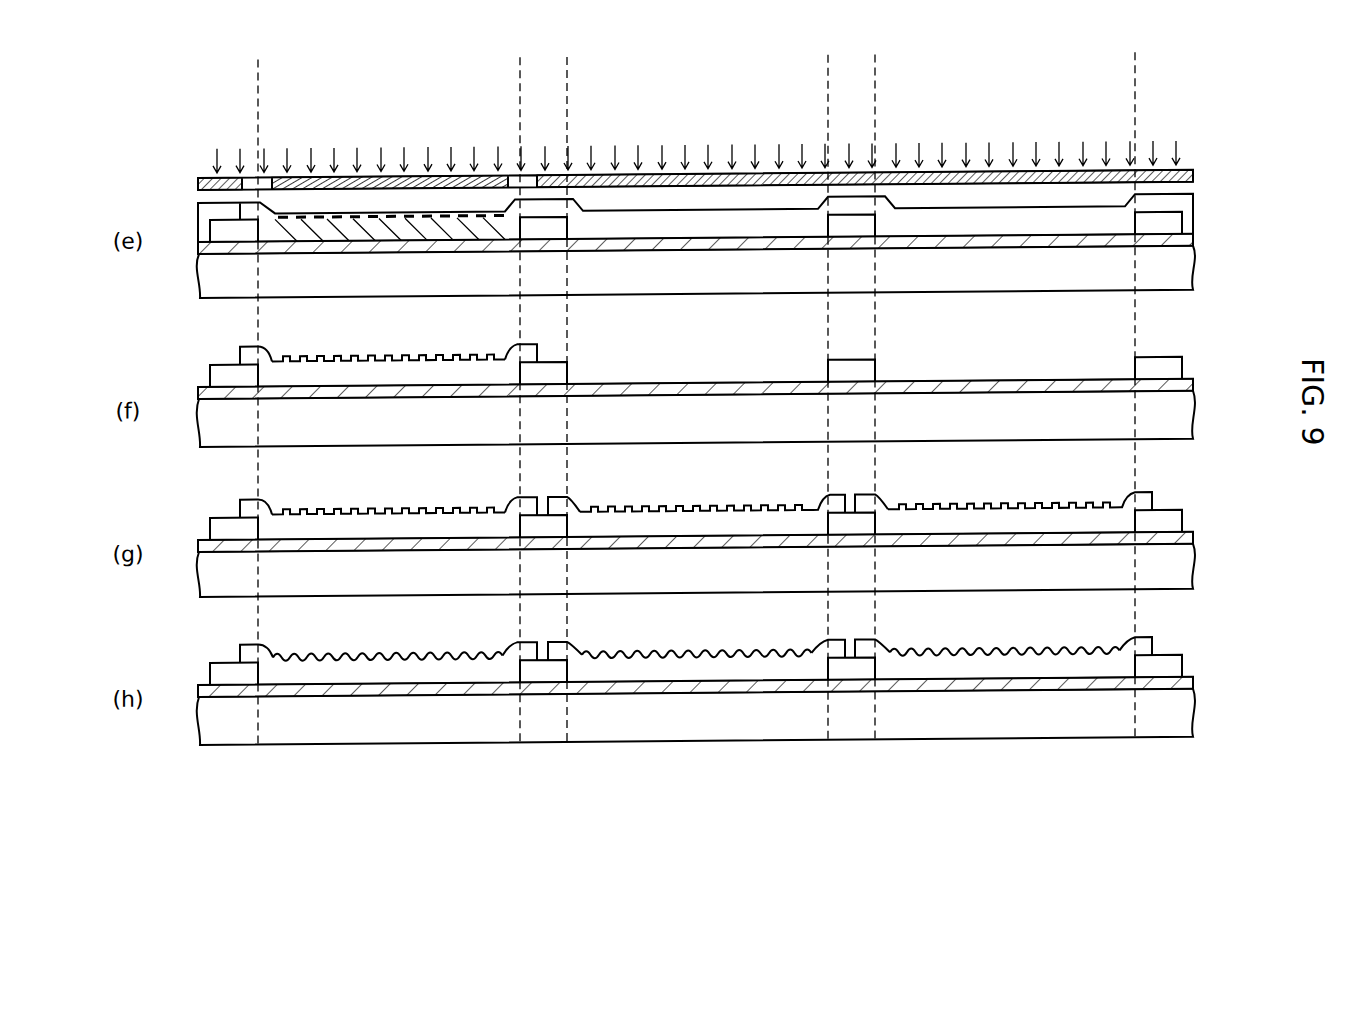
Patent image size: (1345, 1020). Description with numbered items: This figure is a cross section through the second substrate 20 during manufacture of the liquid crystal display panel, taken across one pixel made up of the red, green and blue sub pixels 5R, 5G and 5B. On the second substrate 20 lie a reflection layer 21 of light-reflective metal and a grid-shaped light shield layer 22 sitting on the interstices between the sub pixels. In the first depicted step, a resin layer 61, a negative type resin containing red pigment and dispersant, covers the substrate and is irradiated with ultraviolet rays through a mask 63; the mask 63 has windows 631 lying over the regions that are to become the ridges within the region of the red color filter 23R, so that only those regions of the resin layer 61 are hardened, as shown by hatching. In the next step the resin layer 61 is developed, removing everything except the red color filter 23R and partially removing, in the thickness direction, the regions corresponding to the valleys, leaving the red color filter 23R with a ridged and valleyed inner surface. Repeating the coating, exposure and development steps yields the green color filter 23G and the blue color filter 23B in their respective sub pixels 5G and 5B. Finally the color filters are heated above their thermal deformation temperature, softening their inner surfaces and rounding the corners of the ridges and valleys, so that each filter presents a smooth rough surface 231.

The red sub pixel 5R is at (520, 90).
The green sub pixel 5G is at (567, 90).
The blue sub pixel 5B is at (875, 90).
The second substrate 20 is at (1178, 288).
The reflection layer 21 is at (1193, 250).
The light shield layer 22 is at (1182, 237).
The red color filter 23R is at (398, 348).
The green color filter 23G is at (712, 499).
The blue color filter 23B is at (1021, 497).
The rough surface 231 is at (275, 644).
The resin layer 61 is at (1196, 209).
The mask 63 is at (1196, 181).
The windows 631 is at (321, 133).